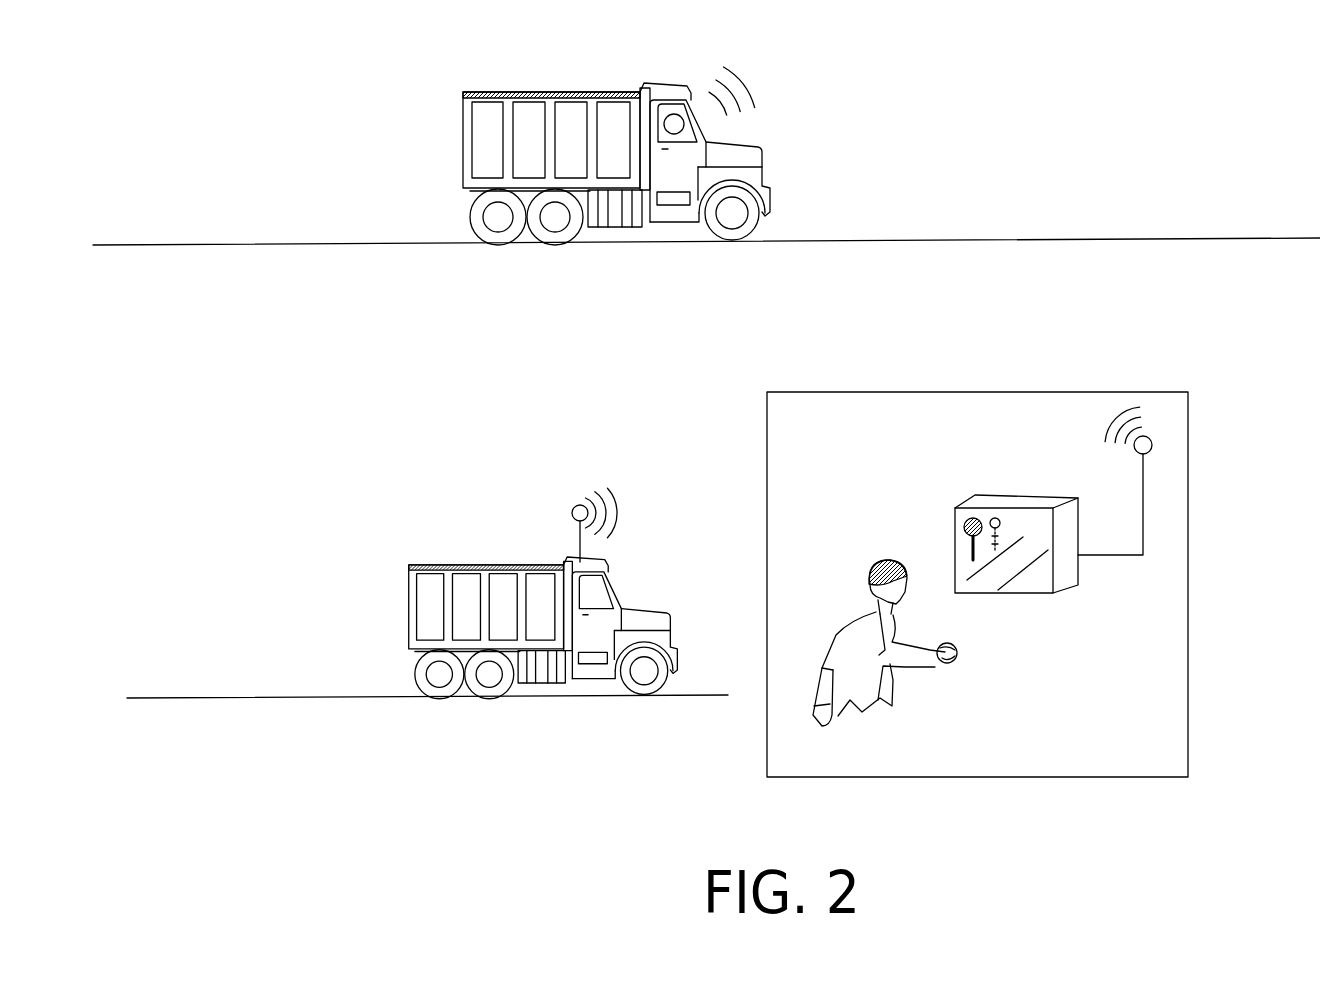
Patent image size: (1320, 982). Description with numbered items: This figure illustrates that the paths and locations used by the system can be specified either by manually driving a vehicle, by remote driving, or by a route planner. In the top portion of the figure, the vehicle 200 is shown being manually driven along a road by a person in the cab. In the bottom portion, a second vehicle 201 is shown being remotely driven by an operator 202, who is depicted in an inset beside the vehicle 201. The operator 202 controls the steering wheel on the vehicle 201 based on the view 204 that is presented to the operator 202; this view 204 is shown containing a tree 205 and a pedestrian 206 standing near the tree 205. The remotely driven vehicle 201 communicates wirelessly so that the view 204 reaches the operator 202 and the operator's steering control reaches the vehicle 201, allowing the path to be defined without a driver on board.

The vehicle 200 is at (560, 88).
The vehicle 201 is at (500, 565).
The operator 202 is at (850, 617).
The view 204 is at (1020, 597).
The tree 205 is at (962, 508).
The pedestrian 206 is at (1002, 510).